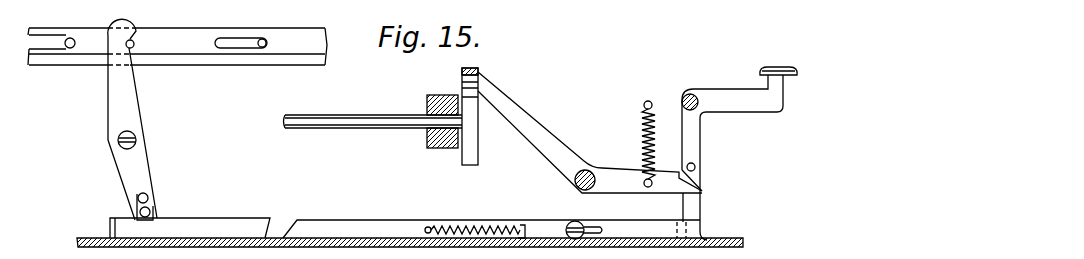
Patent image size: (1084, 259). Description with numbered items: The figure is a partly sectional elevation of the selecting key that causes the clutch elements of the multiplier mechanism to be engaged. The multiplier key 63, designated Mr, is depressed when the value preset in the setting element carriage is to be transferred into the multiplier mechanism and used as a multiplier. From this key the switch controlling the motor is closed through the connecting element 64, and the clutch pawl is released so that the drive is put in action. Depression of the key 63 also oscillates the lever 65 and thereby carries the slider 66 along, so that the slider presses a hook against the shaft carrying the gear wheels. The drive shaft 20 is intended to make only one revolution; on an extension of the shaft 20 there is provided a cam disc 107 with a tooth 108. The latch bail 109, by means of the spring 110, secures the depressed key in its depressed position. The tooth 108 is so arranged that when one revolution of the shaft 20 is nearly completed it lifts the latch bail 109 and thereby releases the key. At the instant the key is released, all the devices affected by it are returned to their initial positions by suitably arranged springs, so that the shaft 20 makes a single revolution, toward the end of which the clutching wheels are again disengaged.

The slider 66 is at (176, 42).
The lever 65 is at (140, 176).
The shaft 20 is at (331, 133).
The cam disc 107 is at (470, 138).
The tooth 108 is at (470, 68).
The latch bail 109 is at (535, 128).
The spring 110 is at (653, 120).
The connecting element 64 is at (612, 232).
The multiplier key 63 is at (772, 67).